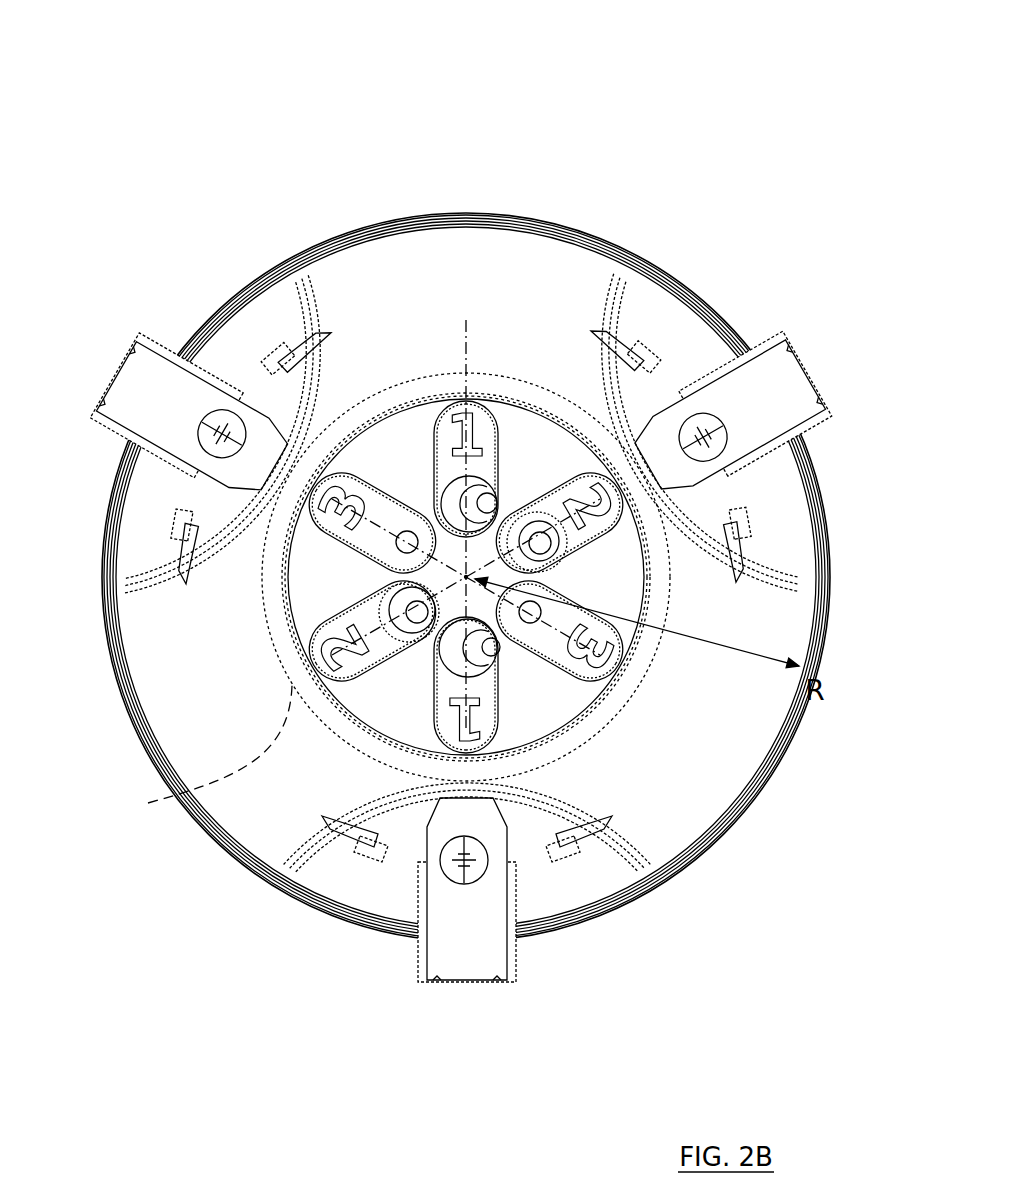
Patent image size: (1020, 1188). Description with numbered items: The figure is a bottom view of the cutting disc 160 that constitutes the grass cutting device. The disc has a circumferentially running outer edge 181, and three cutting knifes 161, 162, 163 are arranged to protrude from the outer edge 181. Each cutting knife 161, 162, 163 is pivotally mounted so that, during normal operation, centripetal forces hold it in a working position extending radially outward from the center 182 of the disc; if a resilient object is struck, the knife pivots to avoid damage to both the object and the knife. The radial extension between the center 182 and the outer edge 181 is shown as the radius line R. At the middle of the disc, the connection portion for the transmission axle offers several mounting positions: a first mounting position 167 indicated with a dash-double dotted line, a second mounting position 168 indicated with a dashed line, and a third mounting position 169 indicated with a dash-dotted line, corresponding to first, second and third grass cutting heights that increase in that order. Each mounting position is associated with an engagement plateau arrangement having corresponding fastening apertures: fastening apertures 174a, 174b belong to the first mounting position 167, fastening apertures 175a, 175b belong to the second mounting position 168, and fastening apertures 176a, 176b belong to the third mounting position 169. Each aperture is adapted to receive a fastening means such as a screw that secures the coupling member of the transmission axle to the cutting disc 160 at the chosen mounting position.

The cutting disc 160 is at (480, 104).
The cutting knife 161 is at (142, 367).
The cutting knife 162 is at (790, 385).
The cutting knife 163 is at (466, 968).
The first mounting position 167 is at (462, 345).
The second mounting position 168 is at (190, 756).
The third mounting position 169 is at (654, 690).
The fastening aperture 174a is at (494, 498).
The fastening aperture 174b is at (470, 652).
The fastening aperture 175a is at (552, 548).
The fastening aperture 175b is at (400, 612).
The fastening aperture 176a is at (534, 620).
The fastening aperture 176b is at (405, 531).
The outer edge 181 is at (655, 228).
The center 182 is at (457, 577).